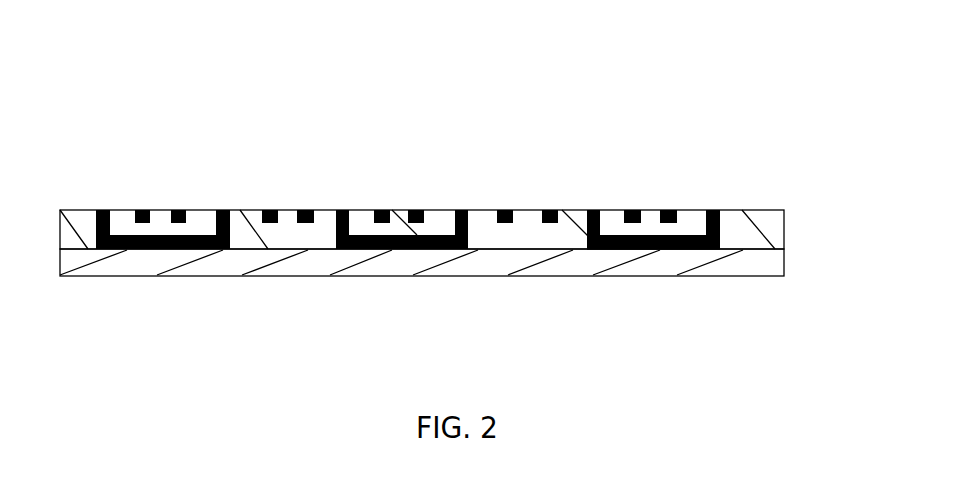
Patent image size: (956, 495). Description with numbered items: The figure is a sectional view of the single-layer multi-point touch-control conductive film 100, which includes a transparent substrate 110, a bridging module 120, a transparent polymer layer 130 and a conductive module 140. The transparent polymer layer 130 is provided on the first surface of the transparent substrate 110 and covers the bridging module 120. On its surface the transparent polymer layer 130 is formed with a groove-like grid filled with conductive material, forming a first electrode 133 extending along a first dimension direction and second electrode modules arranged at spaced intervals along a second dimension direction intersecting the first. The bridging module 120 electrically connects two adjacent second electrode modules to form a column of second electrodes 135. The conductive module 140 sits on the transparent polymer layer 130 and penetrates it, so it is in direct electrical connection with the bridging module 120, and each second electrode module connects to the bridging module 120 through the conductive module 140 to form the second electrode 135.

The single-layer multi-point touch-control conductive film 100 is at (343, 70).
The transparent substrate 110 is at (742, 270).
The bridging module 120 is at (627, 250).
The transparent polymer layer 130 is at (763, 212).
The first electrode 133 is at (630, 209).
The second electrode 135 is at (503, 209).
The conductive module 140 is at (711, 209).